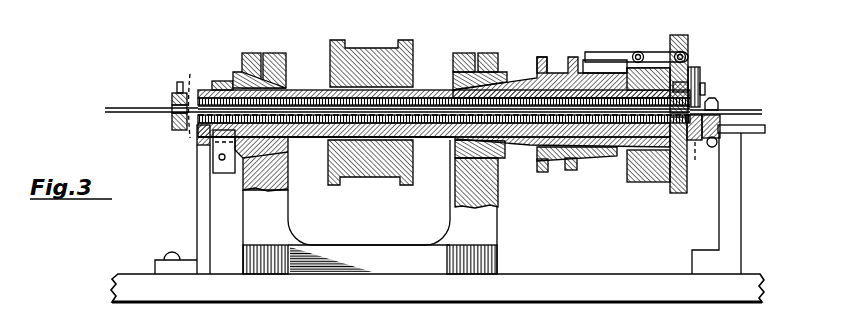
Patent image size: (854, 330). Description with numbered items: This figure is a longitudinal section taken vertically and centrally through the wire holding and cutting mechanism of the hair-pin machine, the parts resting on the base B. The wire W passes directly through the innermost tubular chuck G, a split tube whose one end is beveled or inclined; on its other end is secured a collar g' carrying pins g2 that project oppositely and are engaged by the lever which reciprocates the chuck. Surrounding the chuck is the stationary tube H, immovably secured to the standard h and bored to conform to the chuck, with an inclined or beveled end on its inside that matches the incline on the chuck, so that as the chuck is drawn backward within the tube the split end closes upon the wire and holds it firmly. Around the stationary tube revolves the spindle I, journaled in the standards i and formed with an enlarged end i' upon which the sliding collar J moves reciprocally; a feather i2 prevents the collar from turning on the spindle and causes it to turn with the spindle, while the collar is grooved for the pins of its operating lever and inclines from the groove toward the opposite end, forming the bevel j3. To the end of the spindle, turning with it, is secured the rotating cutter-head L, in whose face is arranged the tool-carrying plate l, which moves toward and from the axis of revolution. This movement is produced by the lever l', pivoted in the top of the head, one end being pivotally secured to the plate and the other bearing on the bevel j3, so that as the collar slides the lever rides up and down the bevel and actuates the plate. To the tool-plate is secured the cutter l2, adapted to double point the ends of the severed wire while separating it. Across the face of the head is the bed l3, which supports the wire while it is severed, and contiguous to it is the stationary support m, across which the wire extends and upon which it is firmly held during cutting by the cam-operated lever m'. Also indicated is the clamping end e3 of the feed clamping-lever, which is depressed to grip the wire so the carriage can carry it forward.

The base plate B is at (437, 288).
The standard h is at (197, 203).
The stationary tube H is at (207, 152).
The revolving spindle I is at (309, 91).
The wire W is at (433, 107).
The tubular chuck G is at (188, 102).
The pins g2 is at (178, 82).
The collar g' is at (163, 100).
The standards i is at (359, 63).
The clamping end of lever e3 is at (370, 104).
The sliding collar J is at (548, 67).
The feather i2 is at (537, 70).
The bevel j3 is at (588, 160).
The rotating cutter-head L is at (637, 177).
The tool-carrying plate l is at (687, 105).
The lever l' is at (635, 51).
The cutter l2 is at (703, 80).
The bed l3 is at (703, 145).
The lever m' is at (721, 95).
The stationary support m is at (728, 199).
The enlarged end of spindle i' is at (491, 174).